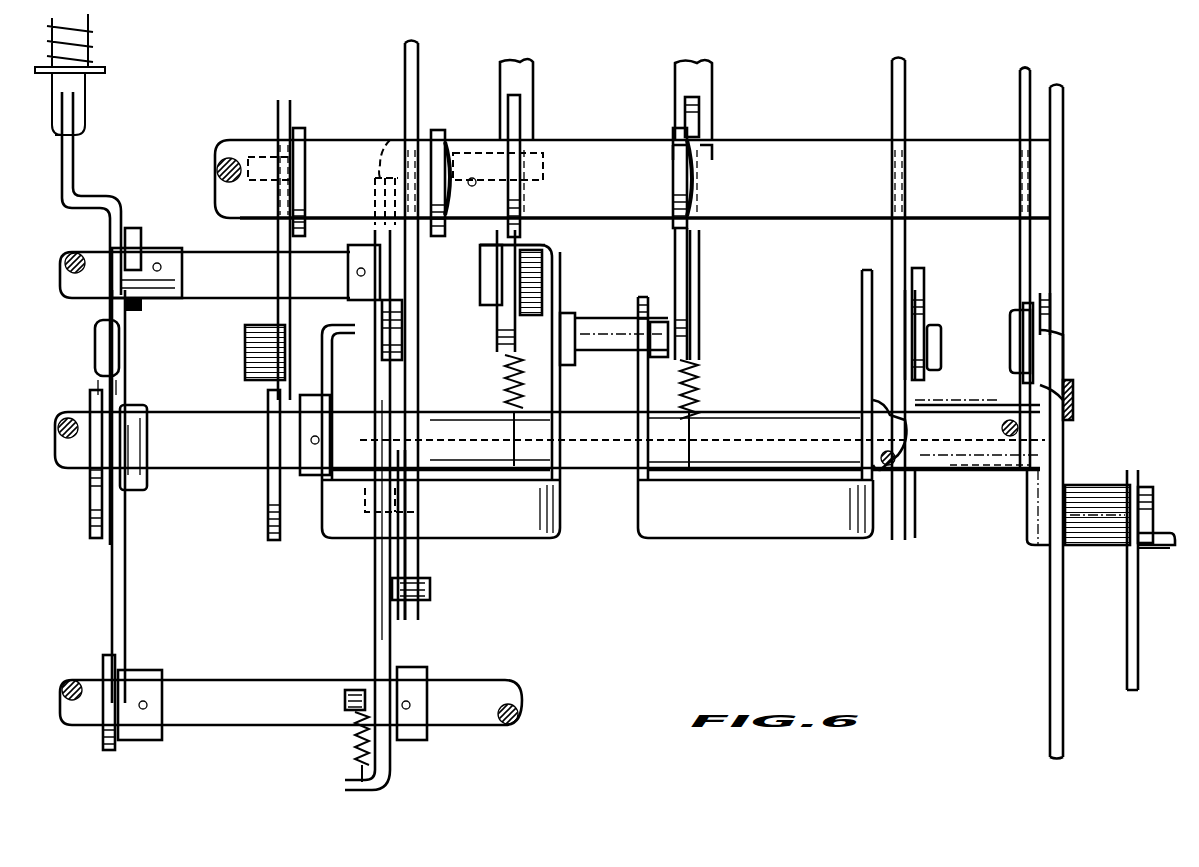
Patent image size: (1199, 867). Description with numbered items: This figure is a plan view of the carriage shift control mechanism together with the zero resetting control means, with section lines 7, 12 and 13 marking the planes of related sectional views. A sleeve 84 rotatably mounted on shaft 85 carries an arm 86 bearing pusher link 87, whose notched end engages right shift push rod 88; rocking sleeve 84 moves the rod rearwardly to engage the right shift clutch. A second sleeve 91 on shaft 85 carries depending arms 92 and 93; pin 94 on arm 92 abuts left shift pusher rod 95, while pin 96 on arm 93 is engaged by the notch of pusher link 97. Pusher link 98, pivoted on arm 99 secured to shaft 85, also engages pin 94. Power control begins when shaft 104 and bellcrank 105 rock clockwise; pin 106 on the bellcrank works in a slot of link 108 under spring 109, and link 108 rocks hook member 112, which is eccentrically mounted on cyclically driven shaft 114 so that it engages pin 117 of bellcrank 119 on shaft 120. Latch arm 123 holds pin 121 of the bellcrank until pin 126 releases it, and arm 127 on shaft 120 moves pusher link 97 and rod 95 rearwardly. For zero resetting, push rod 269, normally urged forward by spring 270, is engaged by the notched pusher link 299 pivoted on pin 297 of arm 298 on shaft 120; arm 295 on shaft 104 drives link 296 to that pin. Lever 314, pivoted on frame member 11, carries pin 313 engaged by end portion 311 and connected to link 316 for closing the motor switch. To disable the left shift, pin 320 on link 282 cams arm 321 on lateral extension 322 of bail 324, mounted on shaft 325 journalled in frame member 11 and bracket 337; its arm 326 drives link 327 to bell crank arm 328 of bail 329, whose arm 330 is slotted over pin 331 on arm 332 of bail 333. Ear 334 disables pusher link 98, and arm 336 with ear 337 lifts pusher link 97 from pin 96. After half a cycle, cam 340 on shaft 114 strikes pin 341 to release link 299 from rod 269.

The section line 7- 7 is at (600, 178).
The side frame member 11 is at (1057, 257).
The section line 12- 12 is at (195, 182).
The section line 13- 13 is at (820, 178).
The sleeve 84 is at (752, 145).
The shaft 85 is at (240, 160).
The arm 86 is at (675, 257).
The pusher link 87 is at (696, 245).
The right shift push rod 88 is at (704, 76).
The sleeve 91 is at (345, 150).
The depending arm 92 is at (440, 230).
The depending arm 93 is at (298, 128).
The pin 94 is at (468, 155).
The left shift pusher rod 95 is at (527, 76).
The pin 96 is at (258, 152).
The pusher link 97 is at (278, 237).
The pusher link 98 is at (506, 332).
The arm 99 is at (504, 312).
The shaft 104 is at (462, 688).
The bellcrank 105 is at (392, 645).
The pin 106 is at (362, 682).
The link 108 is at (374, 628).
The spring 109 is at (352, 748).
The hook member 112 is at (387, 150).
The shaft 114 is at (196, 266).
The pin 117 is at (402, 328).
The bellcrank 119 is at (365, 350).
The shaft 120 is at (762, 420).
The pin 121 is at (425, 502).
The latch arm 123 is at (406, 560).
The pin 126 is at (422, 590).
The arm 127 is at (272, 537).
The push rod 269 is at (74, 122).
The spring 270 is at (91, 56).
The link 282 is at (1133, 635).
The upright arm 295 is at (104, 658).
The link 296 is at (118, 627).
The pin 297 is at (135, 482).
The arm 298 is at (90, 492).
The pusher link 299 is at (108, 315).
The end portion 311 is at (1035, 300).
The pin 313 is at (1015, 349).
The lever 314 is at (1068, 353).
The link 316 is at (1022, 267).
The pin 320 is at (1165, 550).
The arm 321 is at (1148, 515).
The lateral extension 322 is at (1102, 490).
The bail 324 is at (938, 470).
The shaft 325 is at (905, 475).
The arm 326 is at (912, 380).
The link 327 is at (914, 278).
The bell crank arm 328 is at (862, 362).
The bail 329 is at (740, 530).
The arm 330 is at (636, 376).
The pin 331 is at (603, 325).
The extended arm 332 is at (556, 387).
The bail 333 is at (490, 538).
The ear 334 is at (538, 250).
The arm 336 is at (324, 386).
The ear 337 is at (417, 60).
The cam 340 is at (134, 235).
The pin 341 is at (165, 310).